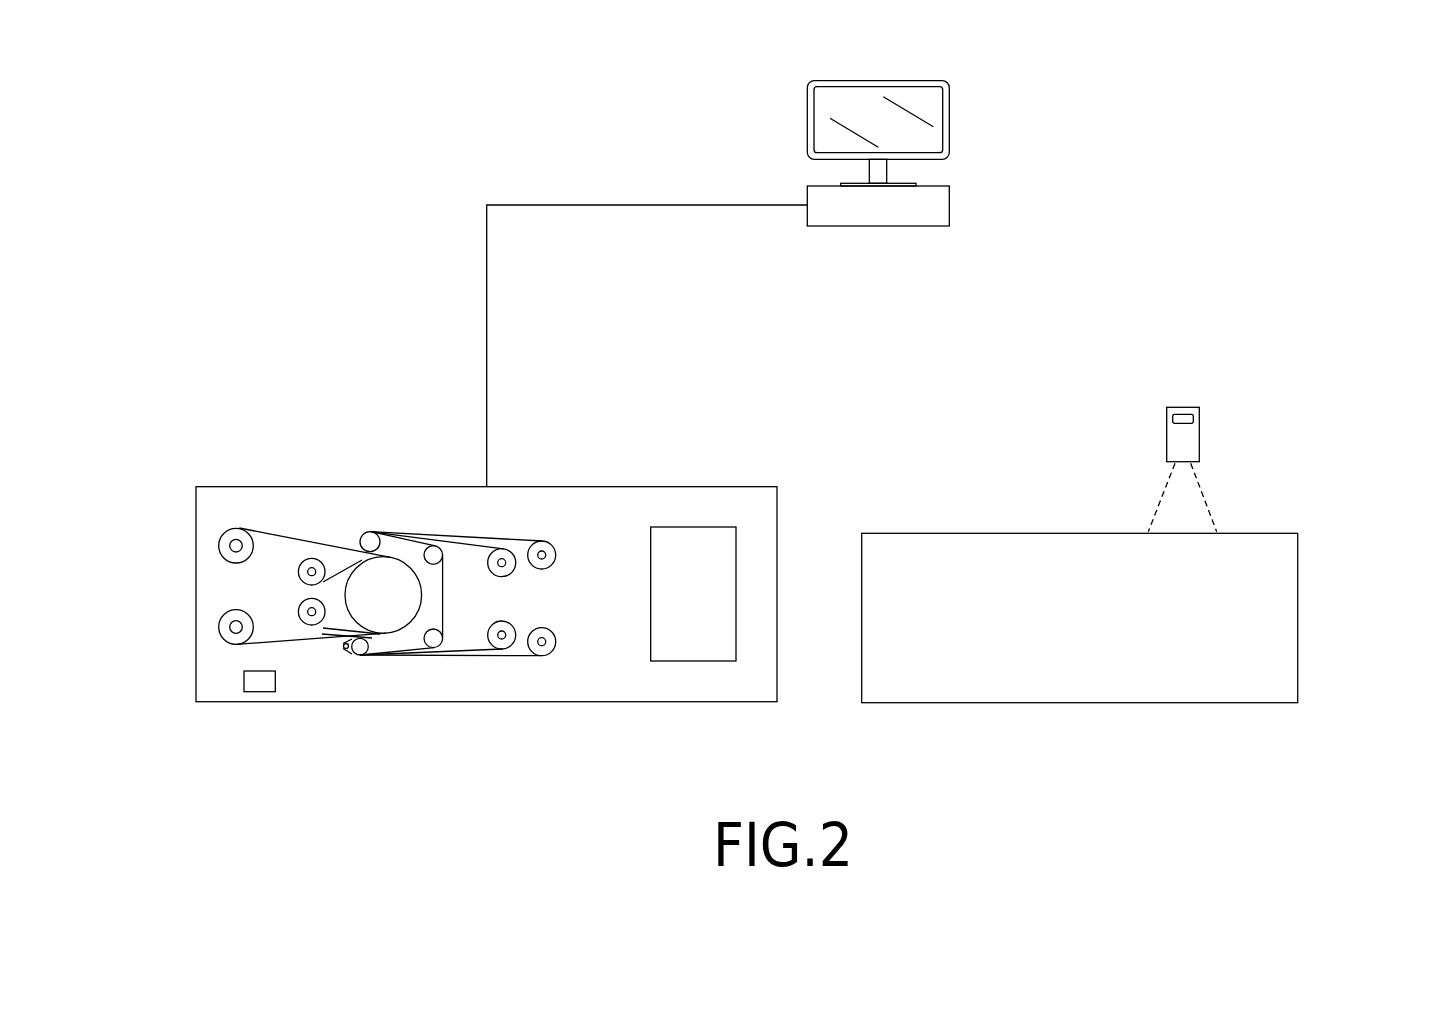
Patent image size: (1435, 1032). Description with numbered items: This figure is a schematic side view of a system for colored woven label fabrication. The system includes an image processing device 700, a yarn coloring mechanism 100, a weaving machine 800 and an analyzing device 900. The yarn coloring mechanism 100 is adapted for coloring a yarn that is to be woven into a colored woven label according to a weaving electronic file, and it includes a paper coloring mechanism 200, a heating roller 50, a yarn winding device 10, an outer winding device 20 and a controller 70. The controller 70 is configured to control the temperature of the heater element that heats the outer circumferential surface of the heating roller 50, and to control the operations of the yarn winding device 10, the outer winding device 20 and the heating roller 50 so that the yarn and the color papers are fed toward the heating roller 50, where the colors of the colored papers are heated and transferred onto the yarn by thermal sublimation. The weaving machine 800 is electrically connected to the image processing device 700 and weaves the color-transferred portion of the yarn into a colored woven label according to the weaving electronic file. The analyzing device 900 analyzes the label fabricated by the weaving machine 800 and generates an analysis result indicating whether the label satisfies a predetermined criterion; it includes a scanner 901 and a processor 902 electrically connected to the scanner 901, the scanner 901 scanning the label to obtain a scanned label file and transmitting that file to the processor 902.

The yarn coloring mechanism 100 is at (275, 477).
The yarn winding device 10 is at (218, 545).
The outer winding device 20 is at (549, 540).
The heating roller 50 is at (389, 608).
The controller 70 is at (262, 692).
The paper coloring mechanism 200 is at (693, 527).
The image processing device 700 is at (950, 119).
The weaving machine 800 is at (1299, 617).
The analyzing device 900 is at (1200, 427).
The scanner 901 is at (1167, 435).
The processor 902 is at (1182, 413).